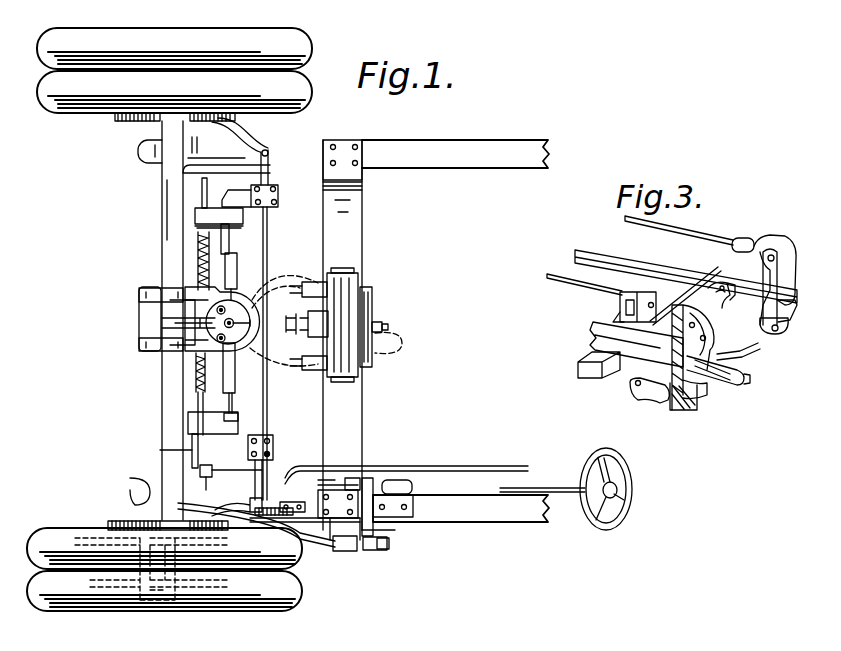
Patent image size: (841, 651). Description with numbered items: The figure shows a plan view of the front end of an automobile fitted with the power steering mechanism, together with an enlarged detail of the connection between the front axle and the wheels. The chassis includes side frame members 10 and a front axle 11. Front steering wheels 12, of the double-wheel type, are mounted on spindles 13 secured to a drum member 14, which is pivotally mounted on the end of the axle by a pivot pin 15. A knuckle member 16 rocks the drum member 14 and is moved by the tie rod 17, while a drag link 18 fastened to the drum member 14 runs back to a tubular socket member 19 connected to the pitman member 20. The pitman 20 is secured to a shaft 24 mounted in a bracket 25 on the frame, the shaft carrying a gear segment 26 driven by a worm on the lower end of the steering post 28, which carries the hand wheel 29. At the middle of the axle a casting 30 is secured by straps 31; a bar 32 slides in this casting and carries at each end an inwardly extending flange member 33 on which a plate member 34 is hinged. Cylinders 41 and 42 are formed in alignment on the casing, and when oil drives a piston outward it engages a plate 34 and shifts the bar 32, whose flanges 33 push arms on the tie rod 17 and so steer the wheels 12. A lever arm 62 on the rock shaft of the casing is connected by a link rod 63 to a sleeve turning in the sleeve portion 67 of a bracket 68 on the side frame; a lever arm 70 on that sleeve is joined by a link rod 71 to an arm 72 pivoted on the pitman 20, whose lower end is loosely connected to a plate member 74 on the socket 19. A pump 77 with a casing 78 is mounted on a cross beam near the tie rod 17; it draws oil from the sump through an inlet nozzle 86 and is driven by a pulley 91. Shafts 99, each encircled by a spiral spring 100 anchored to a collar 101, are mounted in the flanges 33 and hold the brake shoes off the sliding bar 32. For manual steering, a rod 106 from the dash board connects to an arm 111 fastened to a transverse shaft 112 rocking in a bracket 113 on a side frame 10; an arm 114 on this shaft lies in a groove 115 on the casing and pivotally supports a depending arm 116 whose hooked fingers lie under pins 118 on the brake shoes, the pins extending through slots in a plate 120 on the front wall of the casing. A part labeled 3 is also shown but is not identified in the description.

In FIG. 1, the bracket 3 is at (212, 210).
In FIG. 1, the side frame members 10 is at (516, 158).
In FIG. 3, the side frame members 10 is at (585, 368).
In FIG. 1, the front axle 11 is at (163, 372).
In FIG. 3, the front axle 11 is at (604, 340).
In FIG. 1, the front steering wheels 12 is at (78, 88).
In FIG. 1, the spindles 13 is at (147, 588).
In FIG. 3, the spindles 13 is at (722, 380).
In FIG. 1, the drum member 14 is at (128, 116).
In FIG. 3, the drum member 14 is at (680, 410).
In FIG. 1, the pivot pin 15 is at (170, 114).
In FIG. 3, the pivot pin 15 is at (657, 400).
In FIG. 1, the knuckle member 16 is at (268, 146).
In FIG. 3, the knuckle member 16 is at (720, 314).
In FIG. 1, the tie rod 17 is at (270, 222).
In FIG. 3, the tie rod 17 is at (616, 262).
In FIG. 1, the drag link 18 is at (318, 543).
In FIG. 3, the drag link 18 is at (750, 358).
In FIG. 1, the tubular socket member 19 is at (384, 548).
In FIG. 1, the pitman member 20 is at (388, 531).
In FIG. 1, the shaft 24 is at (368, 480).
In FIG. 1, the bracket 25 is at (388, 482).
In FIG. 1, the gear segment 26 is at (352, 478).
In FIG. 1, the steering shaft or post 28 is at (549, 488).
In FIG. 1, the hand wheel 29 is at (620, 492).
In FIG. 1, the casting or bracket 30 is at (141, 309).
In FIG. 1, the straps 31 is at (183, 297).
In FIG. 1, the bar 32 is at (196, 385).
In FIG. 1, the flange member 33 is at (190, 426).
In FIG. 1, the plate member 34 is at (240, 418).
In FIG. 1, the cylinder 41 is at (240, 262).
In FIG. 1, the cylinder 42 is at (236, 384).
In FIG. 1, the lever arm 62 is at (250, 318).
In FIG. 1, the link rod 63 is at (240, 410).
In FIG. 3, the link rod 63 is at (706, 237).
In FIG. 3, the sleeve portion 67 is at (752, 240).
In FIG. 1, the bracket 68 is at (273, 515).
In FIG. 3, the bracket 68 is at (784, 236).
In FIG. 3, the lever arm 70 is at (768, 290).
In FIG. 1, the link rod 71 is at (339, 510).
In FIG. 3, the link rod 71 is at (790, 336).
In FIG. 1, the arm 72 is at (348, 552).
In FIG. 1, the plate member 74 is at (374, 550).
In FIG. 1, the pump 77 is at (372, 302).
In FIG. 1, the casing 78 is at (352, 283).
In FIG. 1, the nozzle 86 is at (386, 325).
In FIG. 1, the pulley 91 is at (302, 322).
In FIG. 1, the shafts 99 is at (200, 190).
In FIG. 1, the spiral spring 100 is at (200, 262).
In FIG. 1, the collar 101 is at (217, 261).
In FIG. 1, the rod 106 is at (462, 466).
In FIG. 3, the rod 106 is at (704, 279).
In FIG. 1, the arm 111 is at (272, 493).
In FIG. 3, the arm 111 is at (622, 304).
In FIG. 1, the transverse shaft 112 is at (200, 405).
In FIG. 3, the transverse shaft 112 is at (560, 282).
In FIG. 1, the bracket 113 is at (195, 470).
In FIG. 3, the bracket 113 is at (645, 292).
In FIG. 1, the arm 114 is at (190, 324).
In FIG. 1, the groove 115 is at (215, 310).
In FIG. 1, the depending arm 116 is at (195, 314).
In FIG. 1, the pins 118 is at (216, 308).
In FIG. 1, the plate 120 is at (205, 300).